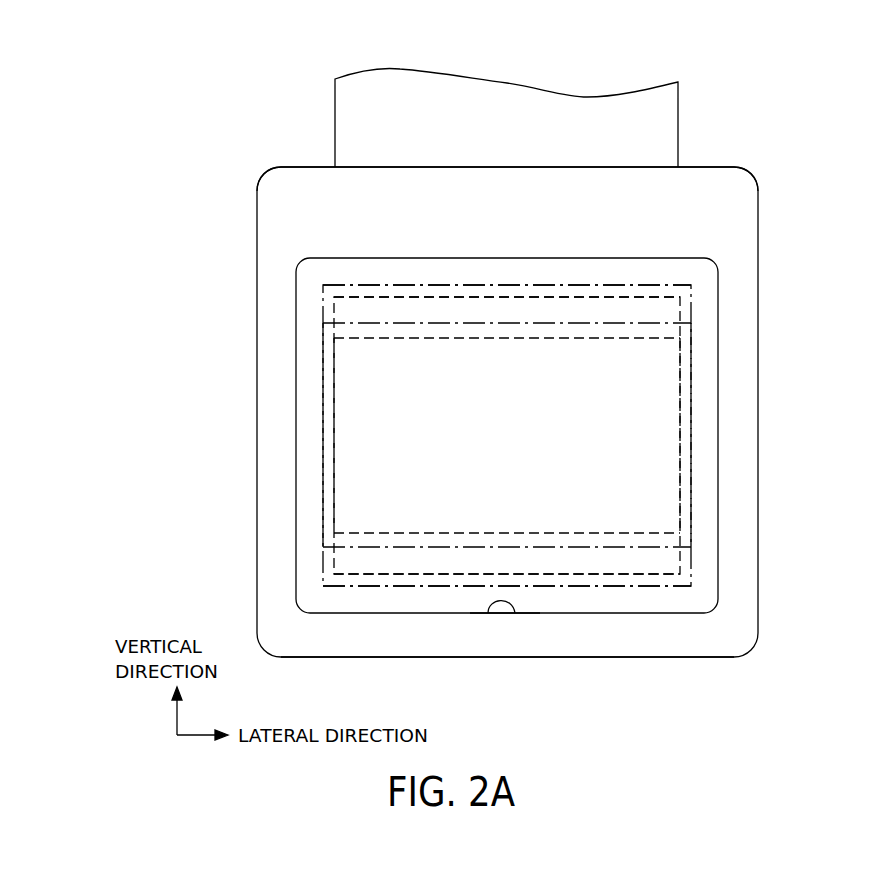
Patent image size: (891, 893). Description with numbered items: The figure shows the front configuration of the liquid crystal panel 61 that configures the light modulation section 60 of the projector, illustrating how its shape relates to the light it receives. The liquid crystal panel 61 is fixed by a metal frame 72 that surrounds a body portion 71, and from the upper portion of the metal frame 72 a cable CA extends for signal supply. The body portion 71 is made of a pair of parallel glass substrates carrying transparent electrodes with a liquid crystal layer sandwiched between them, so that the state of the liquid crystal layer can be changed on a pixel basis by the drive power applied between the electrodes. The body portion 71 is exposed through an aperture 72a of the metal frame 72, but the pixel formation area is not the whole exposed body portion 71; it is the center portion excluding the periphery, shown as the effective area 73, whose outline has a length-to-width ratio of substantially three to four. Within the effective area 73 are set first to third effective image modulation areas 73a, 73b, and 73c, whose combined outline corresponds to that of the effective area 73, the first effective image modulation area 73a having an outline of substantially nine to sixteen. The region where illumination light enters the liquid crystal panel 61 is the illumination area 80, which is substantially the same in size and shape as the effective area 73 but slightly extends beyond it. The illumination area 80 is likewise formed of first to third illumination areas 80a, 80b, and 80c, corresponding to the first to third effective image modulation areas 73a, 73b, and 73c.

The cable CA is at (508, 90).
The light modulation section 60 is at (723, 83).
The liquid crystal panel 61 is at (742, 146).
The body portion 71 is at (423, 603).
The metal frame 72 is at (593, 650).
The aperture 72a is at (515, 613).
The effective area 73 is at (840, 387).
The first effective image modulation area 73a is at (680, 435).
The second effective image modulation area 73b is at (691, 310).
The third effective image modulation area 73c is at (680, 565).
The illumination area 80 is at (178, 387).
The first illumination area 80a is at (323, 440).
The second illumination area 80b is at (323, 310).
The third illumination area 80c is at (323, 565).